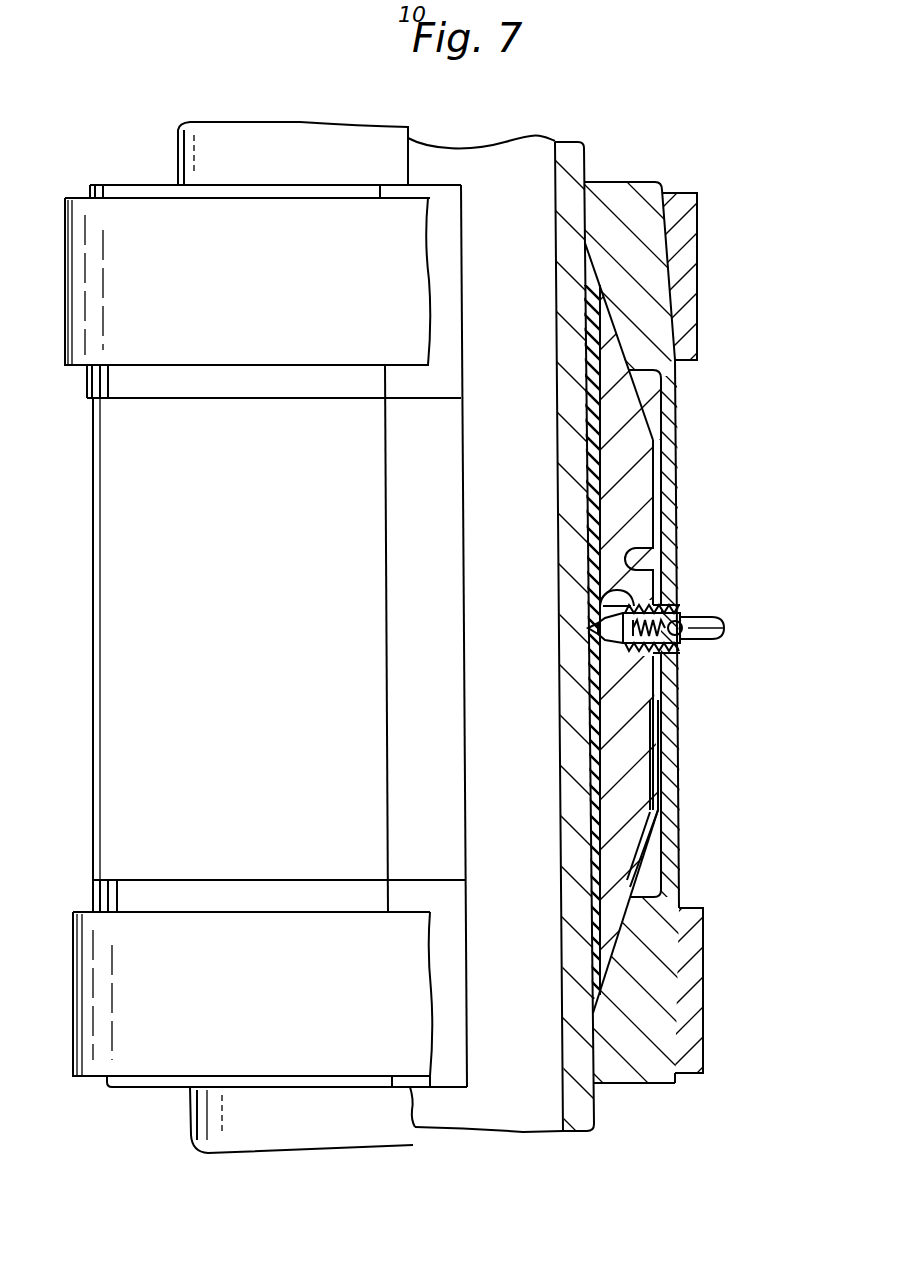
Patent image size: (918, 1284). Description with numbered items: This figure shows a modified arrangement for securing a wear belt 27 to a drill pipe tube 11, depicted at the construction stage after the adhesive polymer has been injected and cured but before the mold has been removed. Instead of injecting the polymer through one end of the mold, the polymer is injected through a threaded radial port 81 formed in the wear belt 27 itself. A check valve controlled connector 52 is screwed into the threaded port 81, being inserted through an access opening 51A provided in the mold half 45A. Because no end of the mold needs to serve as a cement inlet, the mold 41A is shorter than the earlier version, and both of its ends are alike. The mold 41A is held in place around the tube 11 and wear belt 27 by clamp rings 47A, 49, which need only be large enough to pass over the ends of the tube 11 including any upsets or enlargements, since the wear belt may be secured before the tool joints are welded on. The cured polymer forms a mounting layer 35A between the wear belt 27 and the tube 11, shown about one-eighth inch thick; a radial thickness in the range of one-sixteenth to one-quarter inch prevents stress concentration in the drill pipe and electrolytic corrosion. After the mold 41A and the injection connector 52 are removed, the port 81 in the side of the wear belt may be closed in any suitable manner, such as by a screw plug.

The tube 11 is at (557, 413).
The wear belt 27 is at (640, 769).
The mounting layer 35A is at (598, 715).
The mold 41A is at (82, 612).
The mold half 45A is at (678, 440).
The clamp ring 47A is at (697, 285).
The clamp ring 49 is at (705, 982).
The access opening 51A is at (678, 570).
The check valve controlled connector 52 is at (690, 611).
The radial port 81 is at (592, 594).